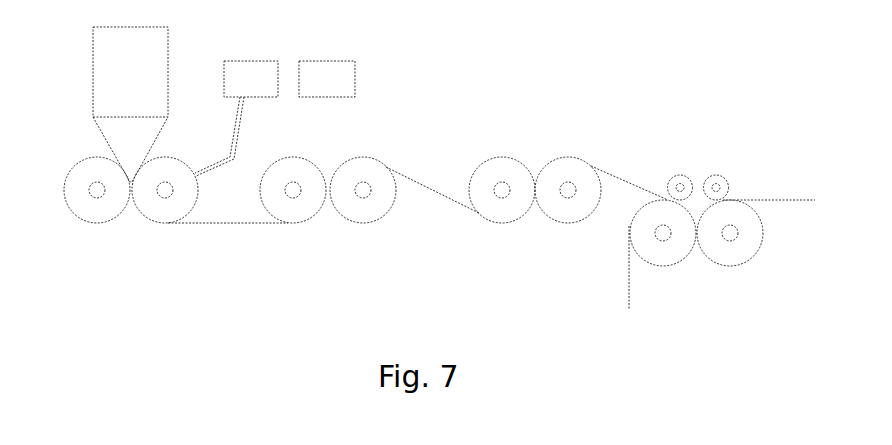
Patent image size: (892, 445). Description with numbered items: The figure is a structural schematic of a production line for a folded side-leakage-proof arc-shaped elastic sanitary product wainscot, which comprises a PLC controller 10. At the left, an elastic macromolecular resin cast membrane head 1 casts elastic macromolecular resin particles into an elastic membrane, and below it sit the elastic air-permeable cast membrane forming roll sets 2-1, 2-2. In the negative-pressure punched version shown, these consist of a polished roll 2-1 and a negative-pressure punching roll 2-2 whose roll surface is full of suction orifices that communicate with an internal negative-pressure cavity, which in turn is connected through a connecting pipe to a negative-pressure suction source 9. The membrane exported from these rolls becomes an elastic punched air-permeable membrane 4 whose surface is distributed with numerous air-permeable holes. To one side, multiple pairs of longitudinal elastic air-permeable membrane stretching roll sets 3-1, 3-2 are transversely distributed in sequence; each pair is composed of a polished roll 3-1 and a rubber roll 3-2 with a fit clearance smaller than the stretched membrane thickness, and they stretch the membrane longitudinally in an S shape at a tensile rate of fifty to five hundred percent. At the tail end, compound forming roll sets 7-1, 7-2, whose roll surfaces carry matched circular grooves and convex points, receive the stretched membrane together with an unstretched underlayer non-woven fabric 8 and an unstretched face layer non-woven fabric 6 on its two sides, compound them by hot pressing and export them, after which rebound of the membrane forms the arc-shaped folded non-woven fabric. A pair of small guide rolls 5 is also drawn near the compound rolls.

The elastic macromolecular resin cast membrane head 1 is at (130, 104).
The polished roll 2-1 is at (80, 167).
The negative-pressure punching roll 2-2 is at (210, 167).
The polished roll 3-1 is at (393, 167).
The rubber roll 3-2 is at (471, 167).
The elastic punched air-permeable membrane 4 is at (629, 156).
The guide rollers 5 is at (710, 176).
The face layer non-woven fabric 6 is at (769, 178).
The compound forming roll 7-1 is at (663, 250).
The compound forming roll 7-2 is at (735, 250).
The underlayer non-woven fabric 8 is at (610, 268).
The negative-pressure suction source 9 is at (236, 118).
The PLC controller 10 is at (327, 79).